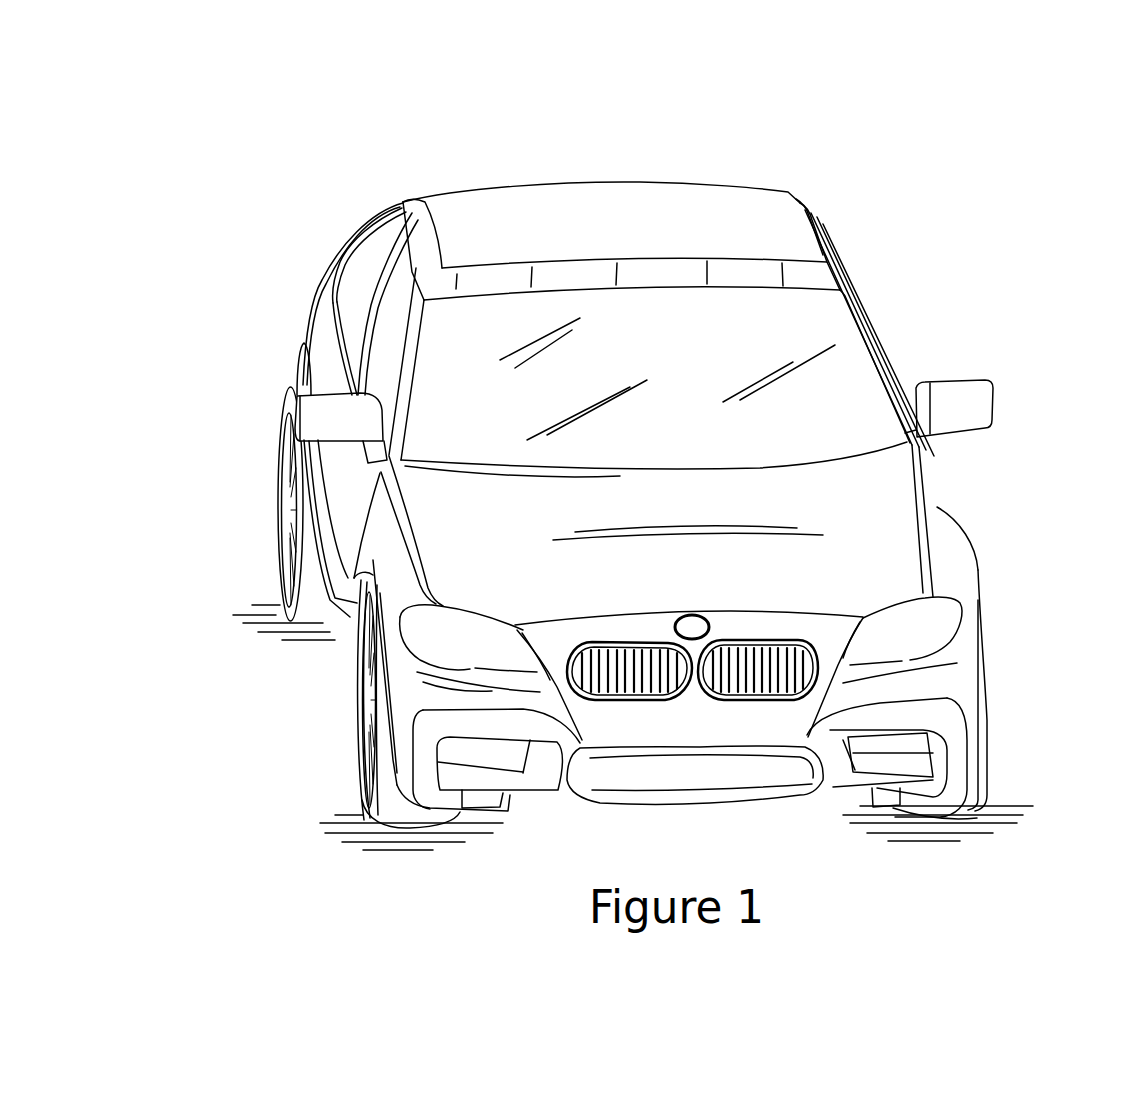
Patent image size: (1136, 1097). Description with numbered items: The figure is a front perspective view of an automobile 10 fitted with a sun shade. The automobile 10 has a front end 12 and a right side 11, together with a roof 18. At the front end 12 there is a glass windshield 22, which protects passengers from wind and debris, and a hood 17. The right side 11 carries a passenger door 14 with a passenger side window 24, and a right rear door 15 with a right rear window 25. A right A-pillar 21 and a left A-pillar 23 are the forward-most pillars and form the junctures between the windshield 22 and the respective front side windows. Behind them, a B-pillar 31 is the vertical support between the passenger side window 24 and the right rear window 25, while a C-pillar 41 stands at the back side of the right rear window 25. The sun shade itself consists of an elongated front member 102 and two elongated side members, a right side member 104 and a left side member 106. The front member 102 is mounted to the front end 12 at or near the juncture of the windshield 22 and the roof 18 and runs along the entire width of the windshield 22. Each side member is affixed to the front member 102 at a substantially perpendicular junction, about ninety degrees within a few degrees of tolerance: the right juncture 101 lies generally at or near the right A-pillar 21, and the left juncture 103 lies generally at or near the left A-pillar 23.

The automobile 10 is at (1010, 537).
The right side 11 is at (255, 515).
The front end 12 is at (755, 735).
The passenger door 14 is at (333, 485).
The right rear door 15 is at (323, 367).
The hood 17 is at (653, 517).
The roof 18 is at (730, 207).
The right A-pillar 21 is at (413, 380).
The windshield 22 is at (843, 380).
The left A-pillar 23 is at (863, 336).
The passenger side window 24 is at (385, 345).
The right rear window 25 is at (385, 275).
The B-pillar 31 is at (380, 310).
The C-pillar 41 is at (387, 213).
The right juncture 101 is at (432, 272).
The front member 102 is at (572, 273).
The left juncture 103 is at (840, 277).
The right side member 104 is at (407, 243).
The left side member 106 is at (823, 237).